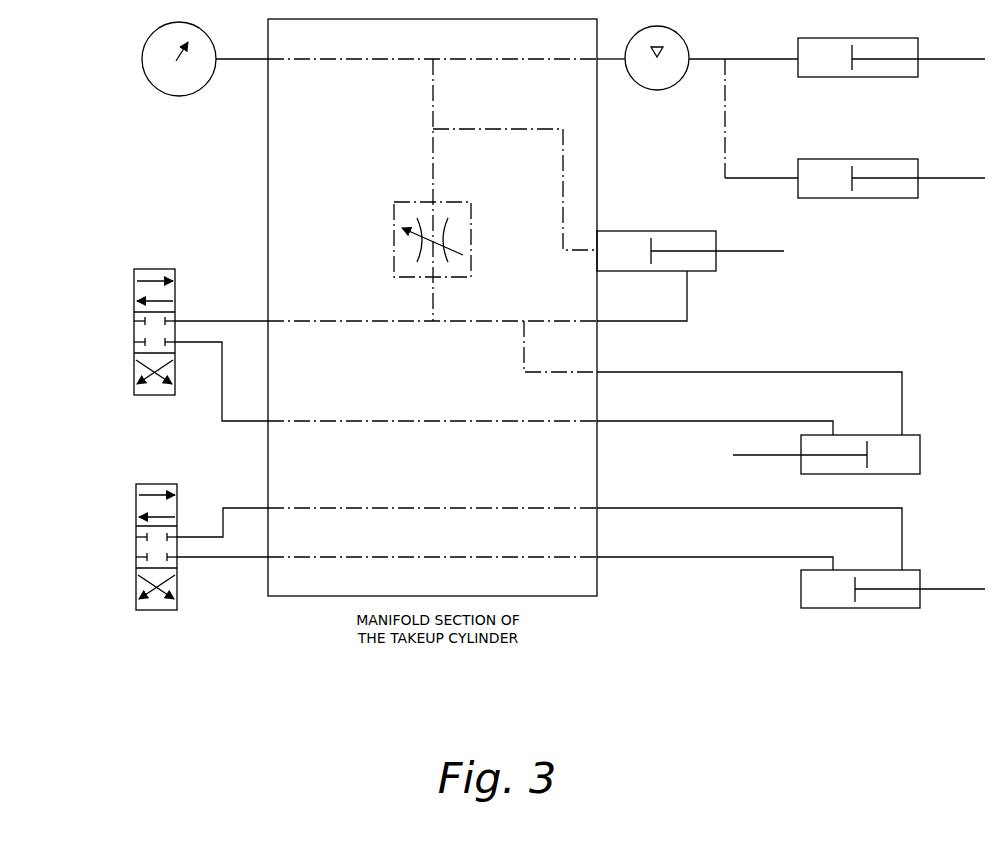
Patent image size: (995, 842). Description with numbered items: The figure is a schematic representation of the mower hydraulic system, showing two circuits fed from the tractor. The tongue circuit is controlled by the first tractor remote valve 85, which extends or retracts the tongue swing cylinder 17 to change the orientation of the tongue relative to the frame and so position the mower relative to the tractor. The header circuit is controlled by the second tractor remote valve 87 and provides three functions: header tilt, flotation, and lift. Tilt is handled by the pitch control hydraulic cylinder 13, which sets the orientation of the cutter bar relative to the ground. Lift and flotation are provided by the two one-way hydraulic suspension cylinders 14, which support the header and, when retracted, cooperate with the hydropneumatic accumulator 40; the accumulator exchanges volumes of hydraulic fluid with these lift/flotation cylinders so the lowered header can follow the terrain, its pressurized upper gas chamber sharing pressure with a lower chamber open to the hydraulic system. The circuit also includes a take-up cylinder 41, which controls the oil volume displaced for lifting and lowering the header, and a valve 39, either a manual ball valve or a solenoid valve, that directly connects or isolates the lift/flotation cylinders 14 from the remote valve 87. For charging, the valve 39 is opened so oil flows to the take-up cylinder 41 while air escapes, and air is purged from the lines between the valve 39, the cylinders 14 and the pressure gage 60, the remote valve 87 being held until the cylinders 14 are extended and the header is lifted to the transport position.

The pressure gage 60 is at (147, 58).
The valve 39 is at (471, 215).
The hydropneumatic accumulator 40 is at (662, 83).
The hydraulic suspension cylinders 14 is at (840, 70).
The take-up cylinder 41 is at (707, 265).
The pitch control hydraulic cylinder 13 is at (888, 468).
The tongue swing cylinder 17 is at (842, 603).
The second tractor remote valve 87 is at (140, 290).
The first tractor remote valve 85 is at (142, 505).